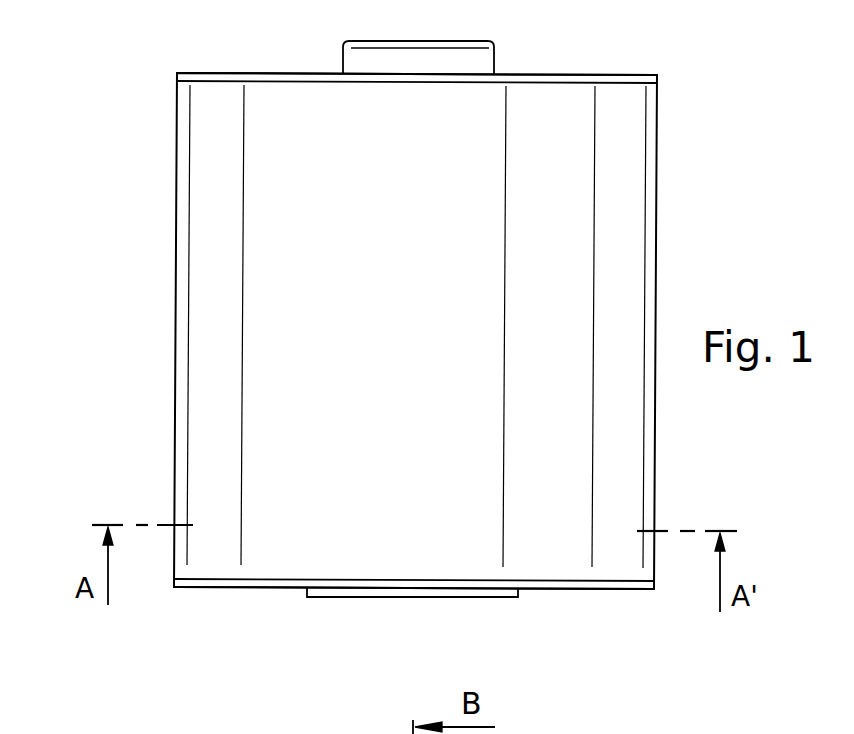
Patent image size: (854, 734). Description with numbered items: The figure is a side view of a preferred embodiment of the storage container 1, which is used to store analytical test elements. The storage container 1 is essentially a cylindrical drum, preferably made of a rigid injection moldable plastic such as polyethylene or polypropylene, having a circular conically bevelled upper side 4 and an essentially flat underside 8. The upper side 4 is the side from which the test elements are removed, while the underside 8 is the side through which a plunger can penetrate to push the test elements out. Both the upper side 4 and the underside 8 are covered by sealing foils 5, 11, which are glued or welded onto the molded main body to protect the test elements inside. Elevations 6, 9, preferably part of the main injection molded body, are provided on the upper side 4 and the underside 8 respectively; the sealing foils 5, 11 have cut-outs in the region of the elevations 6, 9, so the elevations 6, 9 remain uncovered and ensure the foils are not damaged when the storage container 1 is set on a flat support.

The storage container 1 is at (150, 359).
The conically bevelled upper side of the storage container 4 is at (625, 58).
The sealing foil for the upper side 5 is at (177, 73).
The elevation on the conically bevelled upper side 6 is at (356, 62).
The flat underside of the storage container 8 is at (558, 618).
The elevation on the flat underside 9 is at (388, 597).
The sealing foil for the underside 11 is at (203, 583).